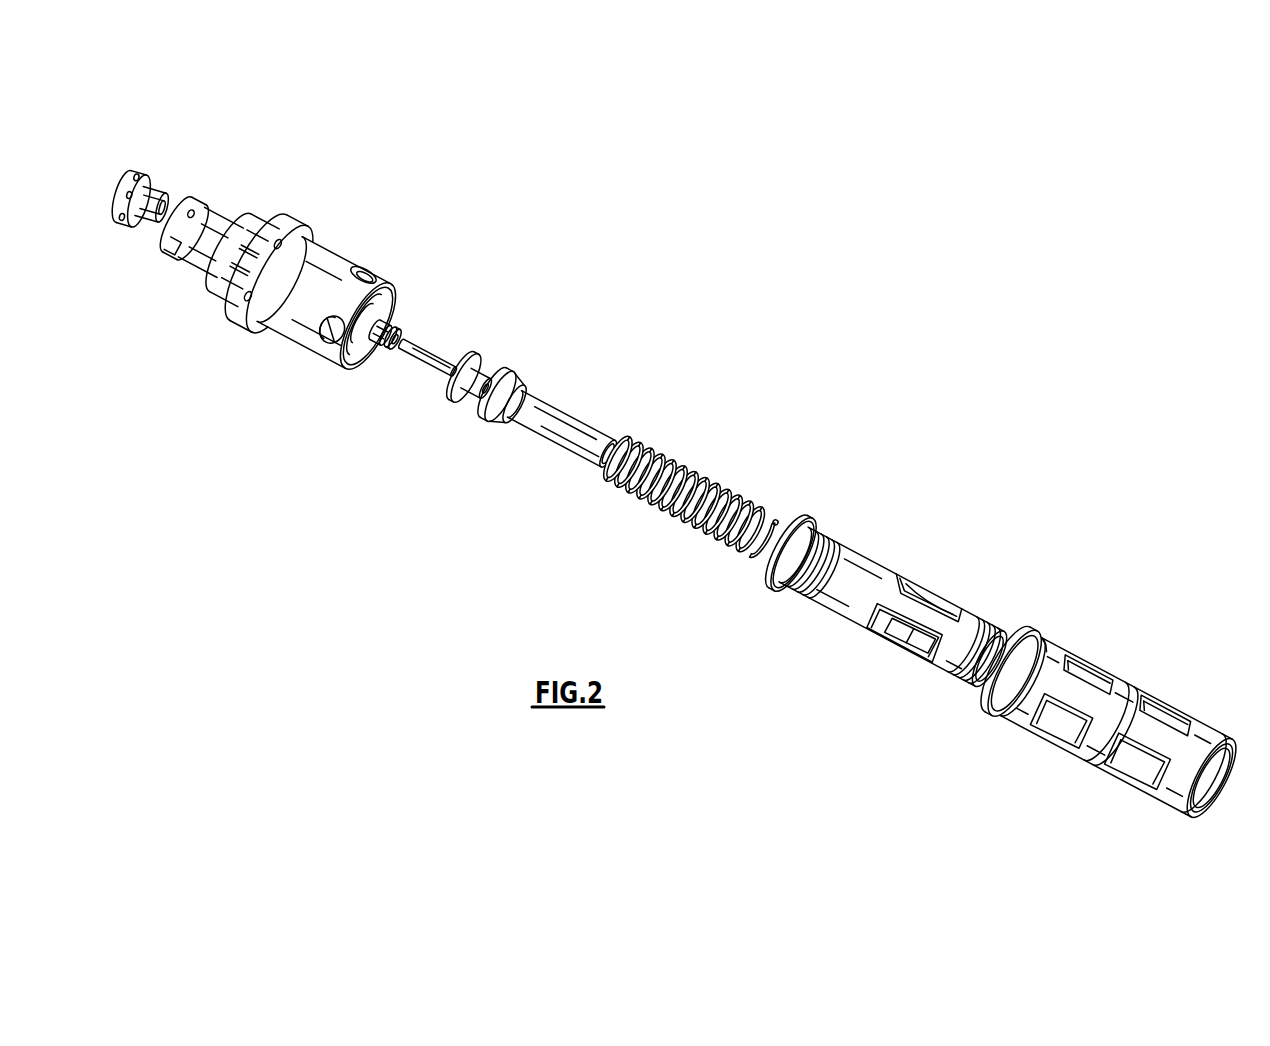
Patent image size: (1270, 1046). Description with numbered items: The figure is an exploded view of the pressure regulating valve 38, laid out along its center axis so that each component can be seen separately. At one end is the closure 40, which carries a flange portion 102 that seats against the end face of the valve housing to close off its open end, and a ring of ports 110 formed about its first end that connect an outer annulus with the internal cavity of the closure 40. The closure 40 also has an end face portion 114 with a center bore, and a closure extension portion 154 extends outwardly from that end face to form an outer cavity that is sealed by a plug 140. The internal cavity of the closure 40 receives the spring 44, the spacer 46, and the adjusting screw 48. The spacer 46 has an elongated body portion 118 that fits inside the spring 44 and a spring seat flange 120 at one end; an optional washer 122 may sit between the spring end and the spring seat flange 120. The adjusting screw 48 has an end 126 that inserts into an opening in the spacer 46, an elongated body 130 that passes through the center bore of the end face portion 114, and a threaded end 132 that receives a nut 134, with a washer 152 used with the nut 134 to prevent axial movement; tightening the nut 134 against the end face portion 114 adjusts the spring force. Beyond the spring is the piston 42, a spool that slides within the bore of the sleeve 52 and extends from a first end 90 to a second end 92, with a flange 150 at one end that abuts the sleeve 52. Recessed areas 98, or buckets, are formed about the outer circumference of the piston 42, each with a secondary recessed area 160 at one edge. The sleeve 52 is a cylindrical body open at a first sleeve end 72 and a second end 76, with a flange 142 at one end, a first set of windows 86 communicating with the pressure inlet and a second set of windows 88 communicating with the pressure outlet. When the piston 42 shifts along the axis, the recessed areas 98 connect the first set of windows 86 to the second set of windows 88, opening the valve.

The pressure regulating valve 38 is at (880, 323).
The closure 40 is at (319, 372).
The piston 42 is at (885, 586).
The spring 44 is at (712, 481).
The spacer 46 is at (563, 393).
The adjusting screw 48 is at (464, 401).
The sleeve 52 is at (1104, 713).
The first sleeve end 72 is at (1187, 803).
The second end of the sleeve 76 is at (1063, 645).
The first set of windows 86 is at (1102, 677).
The second set of windows 88 is at (1163, 717).
The first end of the piston 90 is at (1015, 630).
The second end of the piston 92 is at (793, 587).
The recessed areas 98 is at (942, 598).
The flange portion 102 is at (287, 218).
The ports 110 is at (363, 277).
The end face portion 114 is at (227, 293).
The elongated body portion 118 is at (550, 422).
The spring seat flange 120 is at (518, 388).
The washer 122 is at (640, 450).
The end of the adjusting screw 126 is at (498, 372).
The elongated body 130 is at (449, 360).
The threaded end 132 is at (418, 336).
The nut 134 is at (375, 346).
The plug 140 is at (140, 174).
The flange 142 is at (1045, 636).
The flange 150 is at (808, 520).
The washer 152 is at (403, 327).
The closure extension portion 154 is at (205, 220).
The secondary recessed area 160 is at (902, 575).